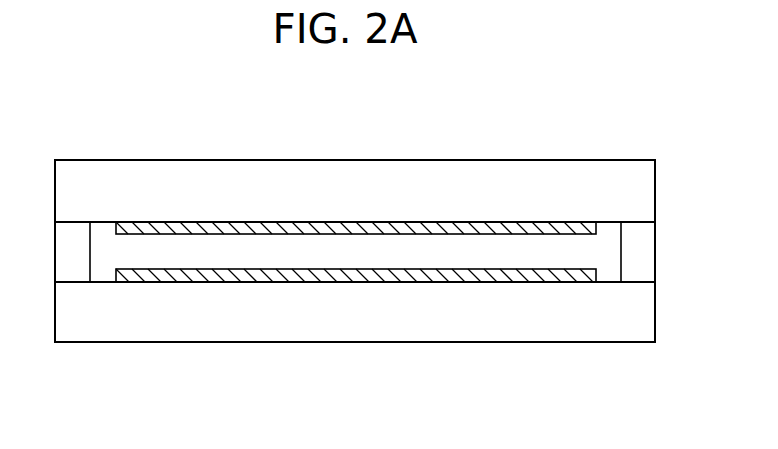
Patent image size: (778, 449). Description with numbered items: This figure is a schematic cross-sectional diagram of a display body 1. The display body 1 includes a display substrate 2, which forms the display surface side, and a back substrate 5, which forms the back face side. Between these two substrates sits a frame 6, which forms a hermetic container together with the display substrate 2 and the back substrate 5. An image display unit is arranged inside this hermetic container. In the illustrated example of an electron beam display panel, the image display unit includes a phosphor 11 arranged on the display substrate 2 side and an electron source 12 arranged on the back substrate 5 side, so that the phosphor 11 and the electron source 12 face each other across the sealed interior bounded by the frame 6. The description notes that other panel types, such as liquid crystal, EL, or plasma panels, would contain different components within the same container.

The display body 1 is at (233, 160).
The display substrate 2 is at (328, 171).
The back substrate 5 is at (388, 332).
The frame 6 is at (647, 250).
The phosphor 11 is at (400, 227).
The electron source 12 is at (488, 276).